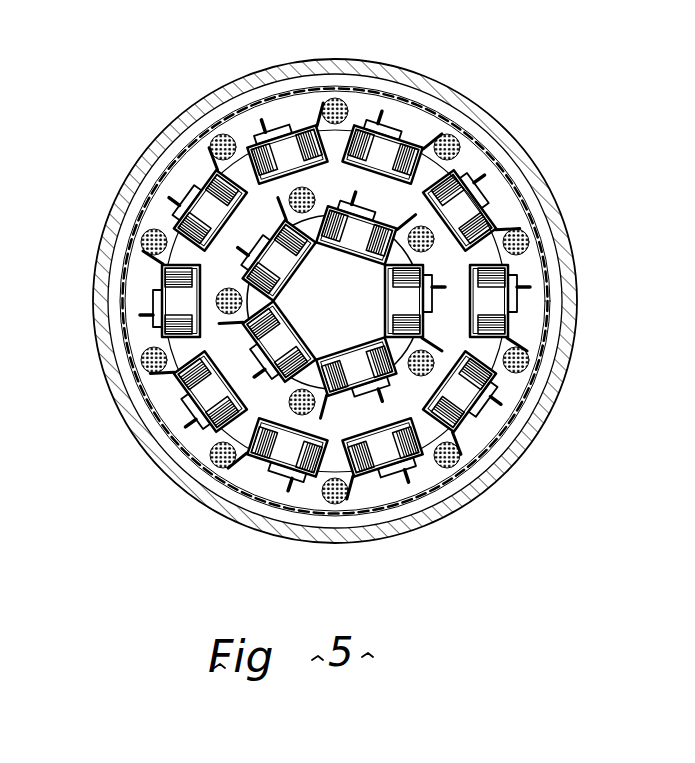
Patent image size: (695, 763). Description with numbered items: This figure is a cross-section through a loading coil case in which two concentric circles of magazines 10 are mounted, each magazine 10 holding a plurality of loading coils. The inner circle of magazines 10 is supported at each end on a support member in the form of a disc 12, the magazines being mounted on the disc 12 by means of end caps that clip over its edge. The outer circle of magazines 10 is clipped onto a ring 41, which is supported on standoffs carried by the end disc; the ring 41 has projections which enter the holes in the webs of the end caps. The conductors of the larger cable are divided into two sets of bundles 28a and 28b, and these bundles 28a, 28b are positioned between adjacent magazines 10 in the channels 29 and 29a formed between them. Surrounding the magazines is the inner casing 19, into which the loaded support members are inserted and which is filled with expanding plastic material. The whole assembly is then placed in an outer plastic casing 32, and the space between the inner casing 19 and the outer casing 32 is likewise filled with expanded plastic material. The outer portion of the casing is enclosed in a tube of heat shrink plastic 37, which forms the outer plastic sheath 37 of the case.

The tube of heat shrink plastic 37 is at (178, 117).
The outer plastic casing 32 is at (168, 462).
The inner casing 19 is at (410, 95).
The disc 12 is at (383, 339).
The bundles 28b is at (233, 137).
The channel 29 is at (452, 279).
The channel 29a is at (145, 338).
The bundles 28a is at (147, 316).
The ring 41 is at (427, 175).
The magazine 10 is at (510, 236).